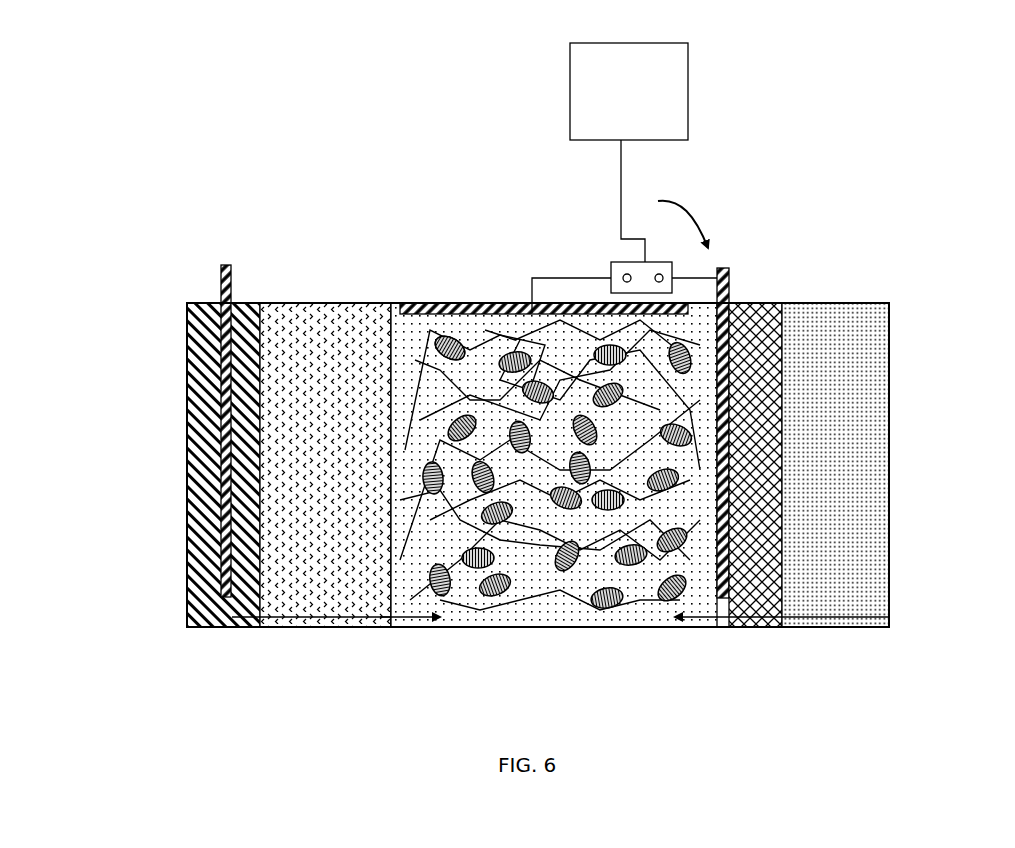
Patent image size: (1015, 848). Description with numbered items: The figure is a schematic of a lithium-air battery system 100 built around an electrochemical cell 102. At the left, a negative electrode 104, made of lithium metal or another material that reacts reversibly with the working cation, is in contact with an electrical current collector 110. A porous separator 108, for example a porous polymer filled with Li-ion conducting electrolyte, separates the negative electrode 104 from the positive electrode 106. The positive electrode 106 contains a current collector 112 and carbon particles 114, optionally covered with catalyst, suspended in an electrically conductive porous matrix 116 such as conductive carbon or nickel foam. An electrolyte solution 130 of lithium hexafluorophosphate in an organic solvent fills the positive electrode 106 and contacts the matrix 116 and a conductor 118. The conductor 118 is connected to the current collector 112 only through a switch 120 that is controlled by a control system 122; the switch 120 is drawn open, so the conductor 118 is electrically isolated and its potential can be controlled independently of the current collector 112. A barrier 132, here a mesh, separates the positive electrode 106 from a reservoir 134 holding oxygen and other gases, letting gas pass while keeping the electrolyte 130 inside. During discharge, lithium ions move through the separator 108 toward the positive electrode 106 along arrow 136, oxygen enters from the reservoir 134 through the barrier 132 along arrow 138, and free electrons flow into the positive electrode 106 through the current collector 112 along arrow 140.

The battery system 100 is at (340, 88).
The electrochemical cell 102 is at (157, 280).
The negative electrode 104 is at (187, 413).
The positive electrode 106 is at (668, 628).
The porous separator 108 is at (306, 628).
The electrical current collector 110 is at (221, 298).
The current collector 112 is at (729, 272).
The carbon particles 114 is at (450, 345).
The porous matrix 116 is at (560, 345).
The conductor 118 is at (488, 303).
The switch 120 is at (616, 263).
The control system 122 is at (690, 100).
The electrolyte solution 130 is at (549, 610).
The barrier 132 is at (762, 303).
The reservoir 134 is at (889, 432).
The arrow 136 is at (390, 628).
The arrow 138 is at (815, 628).
The arrow 140 is at (698, 203).